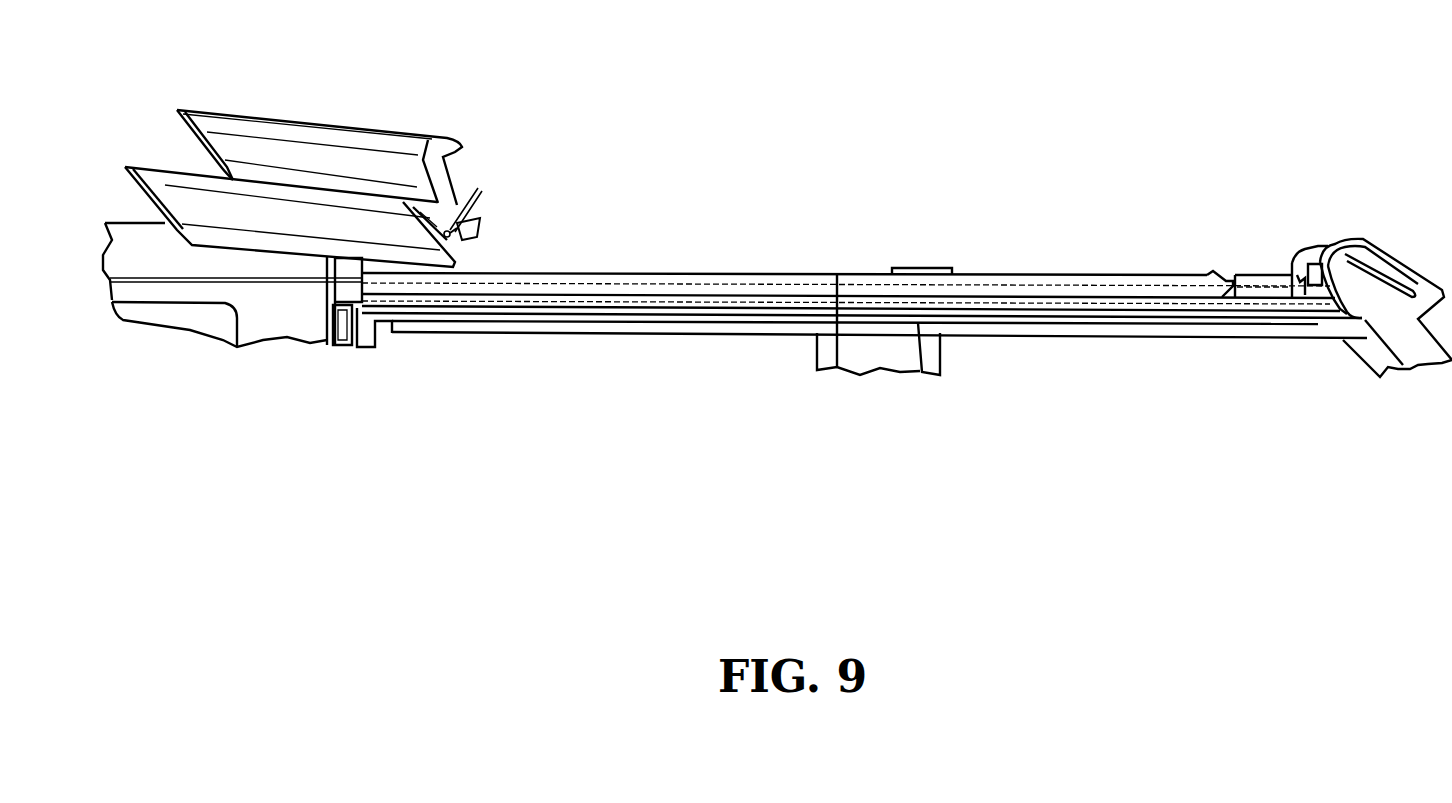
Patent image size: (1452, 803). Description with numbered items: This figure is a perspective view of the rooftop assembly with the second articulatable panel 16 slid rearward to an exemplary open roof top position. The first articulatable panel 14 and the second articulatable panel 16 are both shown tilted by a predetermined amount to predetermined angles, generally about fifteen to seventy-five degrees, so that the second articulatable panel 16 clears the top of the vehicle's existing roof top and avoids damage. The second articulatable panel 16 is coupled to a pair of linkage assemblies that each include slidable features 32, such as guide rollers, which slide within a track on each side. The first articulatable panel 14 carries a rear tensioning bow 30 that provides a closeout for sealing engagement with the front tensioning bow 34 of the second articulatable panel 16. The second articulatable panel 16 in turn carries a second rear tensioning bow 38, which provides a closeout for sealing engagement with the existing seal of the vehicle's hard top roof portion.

The first articulatable panel 14 is at (368, 138).
The second articulatable panel 16 is at (314, 208).
The rear tensioning bow 30 is at (180, 126).
The slidable features 32 is at (478, 188).
The front tensioning bow 34 is at (482, 228).
The second rear tensioning bow 38 is at (132, 196).